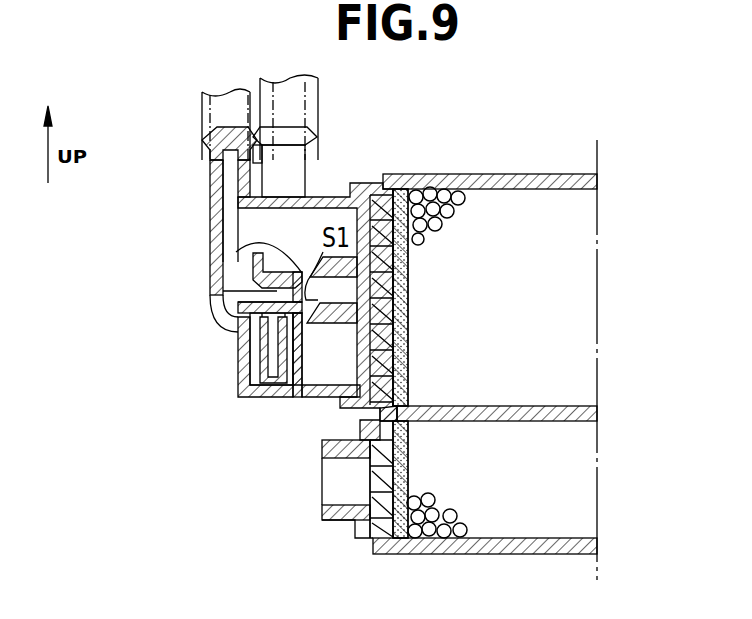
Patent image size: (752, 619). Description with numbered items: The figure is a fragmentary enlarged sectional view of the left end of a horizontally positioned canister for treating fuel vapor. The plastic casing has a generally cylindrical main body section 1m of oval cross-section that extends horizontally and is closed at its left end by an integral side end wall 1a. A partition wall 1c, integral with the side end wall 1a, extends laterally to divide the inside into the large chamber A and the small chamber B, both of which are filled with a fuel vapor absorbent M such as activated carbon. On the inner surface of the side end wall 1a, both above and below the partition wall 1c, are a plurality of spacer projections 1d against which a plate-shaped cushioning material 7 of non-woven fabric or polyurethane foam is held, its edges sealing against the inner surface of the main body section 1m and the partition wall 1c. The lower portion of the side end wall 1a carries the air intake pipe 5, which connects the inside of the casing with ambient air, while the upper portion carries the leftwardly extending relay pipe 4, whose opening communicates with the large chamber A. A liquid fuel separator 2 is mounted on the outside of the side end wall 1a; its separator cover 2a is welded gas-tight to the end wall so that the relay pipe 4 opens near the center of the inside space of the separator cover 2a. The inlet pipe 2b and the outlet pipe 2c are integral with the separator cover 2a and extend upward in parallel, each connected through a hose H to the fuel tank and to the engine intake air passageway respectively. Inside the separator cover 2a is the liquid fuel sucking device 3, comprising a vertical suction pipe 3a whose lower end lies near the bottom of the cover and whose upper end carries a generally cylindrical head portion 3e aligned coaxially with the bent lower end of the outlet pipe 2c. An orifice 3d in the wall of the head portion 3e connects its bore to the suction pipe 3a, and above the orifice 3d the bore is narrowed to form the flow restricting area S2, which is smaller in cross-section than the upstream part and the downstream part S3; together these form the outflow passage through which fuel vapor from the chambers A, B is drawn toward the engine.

The main body section 1m is at (546, 174).
The partition wall 1c is at (530, 406).
The side end wall 1a is at (370, 348).
The spacer projections 1d is at (393, 268).
The cushioning material 7 is at (400, 283).
The relay pipe 4 is at (330, 330).
The air intake pipe 5 is at (333, 480).
The fuel vapor absorbent M is at (446, 185).
The hose H is at (202, 106).
The liquid fuel separator 2 is at (243, 398).
The separator cover 2a is at (238, 343).
The inlet pipe 2b is at (300, 140).
The outlet pipe 2c is at (210, 186).
The liquid fuel sucking device 3 is at (288, 262).
The suction pipe 3a is at (250, 376).
The orifice 3d is at (280, 384).
The head portion 3e is at (262, 262).
The narrowed part S2 is at (222, 296).
The downstream part S3 is at (228, 222).
The large chamber A is at (553, 311).
The small chamber B is at (555, 507).